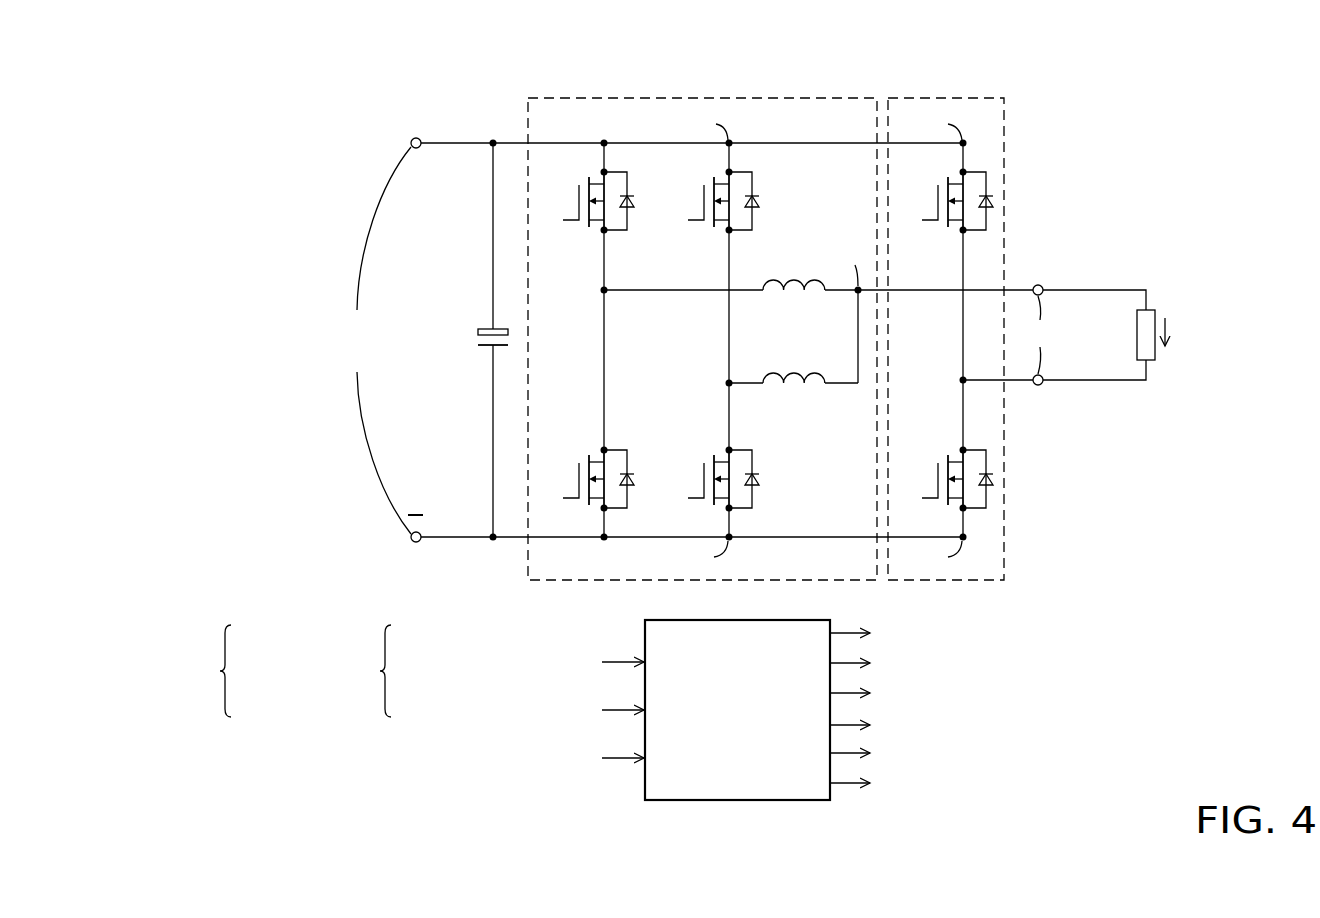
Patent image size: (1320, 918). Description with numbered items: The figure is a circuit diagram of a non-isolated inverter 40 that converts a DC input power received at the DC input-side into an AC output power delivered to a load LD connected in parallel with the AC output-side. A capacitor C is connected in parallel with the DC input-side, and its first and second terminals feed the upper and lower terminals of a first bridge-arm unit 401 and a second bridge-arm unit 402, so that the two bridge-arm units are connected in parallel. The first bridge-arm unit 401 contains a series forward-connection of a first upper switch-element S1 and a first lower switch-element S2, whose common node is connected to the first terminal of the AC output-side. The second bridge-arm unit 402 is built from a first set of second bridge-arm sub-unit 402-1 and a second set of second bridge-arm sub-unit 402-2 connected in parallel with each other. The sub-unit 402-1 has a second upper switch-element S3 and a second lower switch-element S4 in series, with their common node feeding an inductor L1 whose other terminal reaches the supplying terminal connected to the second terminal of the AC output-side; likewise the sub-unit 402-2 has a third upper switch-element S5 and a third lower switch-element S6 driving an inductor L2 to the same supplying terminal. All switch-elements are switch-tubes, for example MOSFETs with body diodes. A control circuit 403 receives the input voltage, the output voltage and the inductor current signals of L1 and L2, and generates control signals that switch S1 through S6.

The non-isolated inverter 40 is at (1188, 668).
The first bridge-arm unit 401 is at (945, 98).
The second bridge-arm unit 402 is at (697, 98).
The first set of second bridge-arm sub-unit 402-1 is at (207, 672).
The second set of second bridge-arm sub-unit 402-2 is at (362, 672).
The control circuit 403 is at (745, 800).
The first upper switch-element S1 is at (946, 201).
The first lower switch-element S2 is at (946, 479).
The second upper switch-element S3 is at (712, 201).
The second lower switch-element S4 is at (712, 479).
The third upper switch-element S5 is at (587, 201).
The third lower switch-element S6 is at (587, 479).
The inductor L1 is at (793, 336).
The inductor L2 is at (731, 268).
The capacitor C is at (481, 340).
The load LD is at (1150, 308).